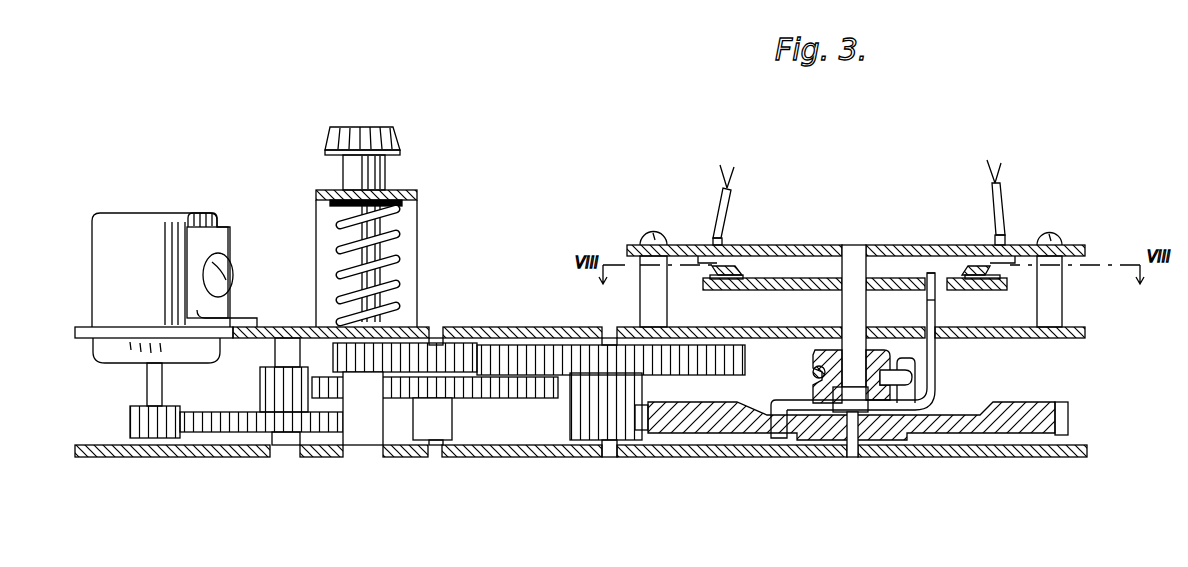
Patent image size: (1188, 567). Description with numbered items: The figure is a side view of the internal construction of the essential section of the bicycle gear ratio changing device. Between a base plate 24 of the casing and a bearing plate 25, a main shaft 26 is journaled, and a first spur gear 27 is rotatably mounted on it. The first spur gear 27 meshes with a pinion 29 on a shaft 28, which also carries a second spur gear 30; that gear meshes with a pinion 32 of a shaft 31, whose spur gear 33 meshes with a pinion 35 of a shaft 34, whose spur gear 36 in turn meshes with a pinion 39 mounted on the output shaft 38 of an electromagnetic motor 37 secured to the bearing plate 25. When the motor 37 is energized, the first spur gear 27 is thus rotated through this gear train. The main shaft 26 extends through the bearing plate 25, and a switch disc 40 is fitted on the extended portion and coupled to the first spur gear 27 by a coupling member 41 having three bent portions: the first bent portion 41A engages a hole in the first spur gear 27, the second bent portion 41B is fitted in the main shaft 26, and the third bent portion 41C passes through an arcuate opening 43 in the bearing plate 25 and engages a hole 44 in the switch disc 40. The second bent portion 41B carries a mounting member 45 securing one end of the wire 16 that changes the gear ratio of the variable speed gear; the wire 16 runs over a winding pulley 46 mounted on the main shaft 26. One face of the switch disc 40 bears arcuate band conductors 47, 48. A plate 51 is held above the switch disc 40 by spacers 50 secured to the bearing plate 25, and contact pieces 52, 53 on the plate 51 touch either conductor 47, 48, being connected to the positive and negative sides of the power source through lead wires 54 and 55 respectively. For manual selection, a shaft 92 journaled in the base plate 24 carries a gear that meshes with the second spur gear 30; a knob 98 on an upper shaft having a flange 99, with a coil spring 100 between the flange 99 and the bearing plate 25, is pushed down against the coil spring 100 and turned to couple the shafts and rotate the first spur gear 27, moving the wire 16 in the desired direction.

The wire 16 is at (890, 386).
The base plate 24 is at (1025, 458).
The bearing plate 25 is at (1085, 333).
The main shaft 26 is at (853, 458).
The first spur gear 27 is at (708, 432).
The shaft 28 is at (610, 458).
The pinion 29 is at (582, 416).
The second spur gear 30 is at (516, 352).
The shaft 31 is at (438, 427).
The pinion 32 is at (445, 353).
The spur gear 33 is at (510, 392).
The shaft 34 is at (285, 442).
The pinion 35 is at (262, 385).
The spur gear 36 is at (213, 430).
The electromagnetic motor 37 is at (153, 217).
The output shaft 38 is at (152, 388).
The pinion 39 is at (150, 434).
The switch disc 40 is at (765, 290).
The coupling member 41 is at (937, 395).
The first bent portion 41A is at (777, 440).
The second bent portion 41B is at (793, 402).
The third bent portion 41C is at (937, 310).
The arcuate opening 43 is at (915, 324).
The hole 44 is at (927, 272).
The mounting member 45 is at (912, 362).
The winding pulley 46 is at (830, 352).
The arcuate band conductor 47 is at (745, 278).
The arcuate band conductor 48 is at (1000, 278).
The spacers 50 is at (1055, 305).
The plate 51 is at (823, 245).
The contact piece 52 is at (722, 265).
The contact piece 53 is at (985, 268).
The lead wire 54 is at (722, 191).
The lead wire 55 is at (1000, 170).
The shaft 92 is at (367, 442).
The knob 98 is at (398, 140).
The flange 99 is at (405, 203).
The coil spring 100 is at (392, 237).